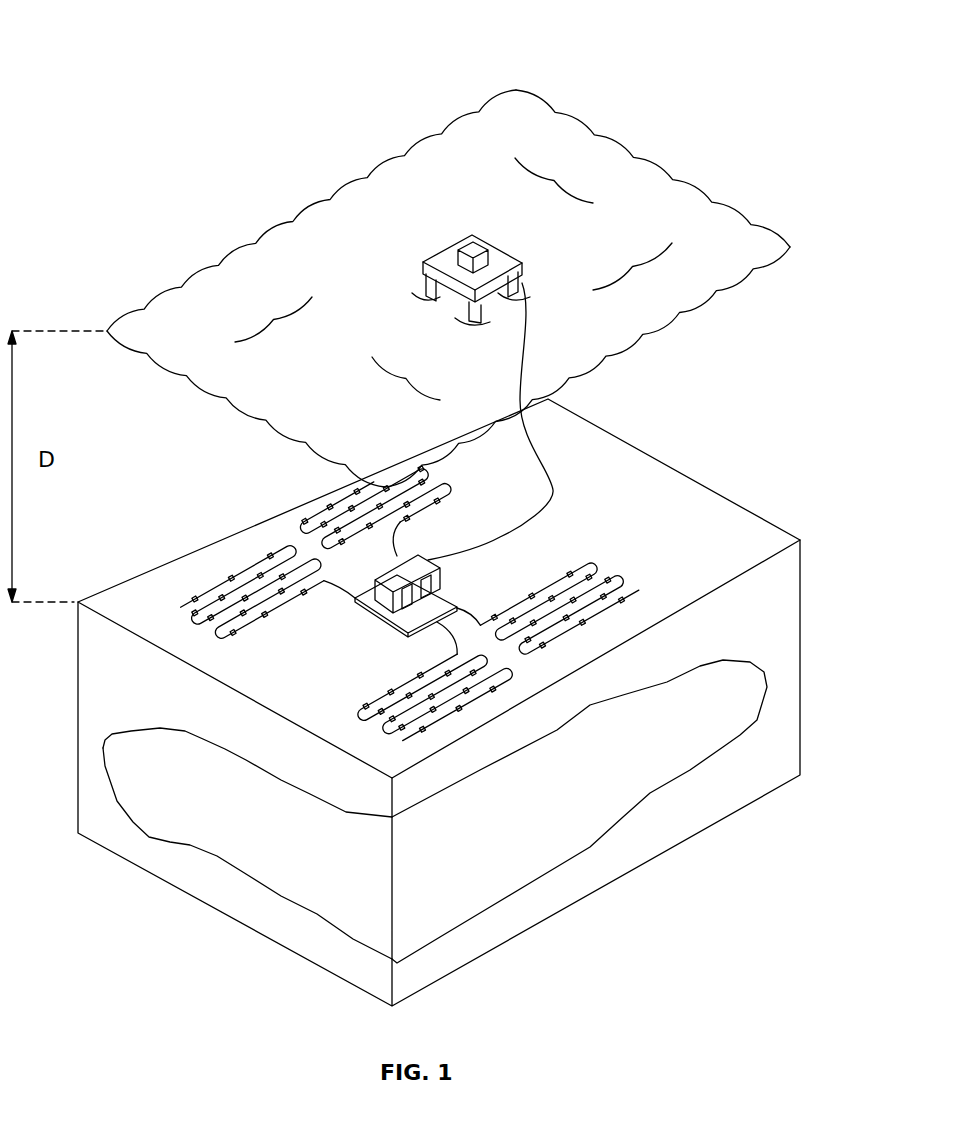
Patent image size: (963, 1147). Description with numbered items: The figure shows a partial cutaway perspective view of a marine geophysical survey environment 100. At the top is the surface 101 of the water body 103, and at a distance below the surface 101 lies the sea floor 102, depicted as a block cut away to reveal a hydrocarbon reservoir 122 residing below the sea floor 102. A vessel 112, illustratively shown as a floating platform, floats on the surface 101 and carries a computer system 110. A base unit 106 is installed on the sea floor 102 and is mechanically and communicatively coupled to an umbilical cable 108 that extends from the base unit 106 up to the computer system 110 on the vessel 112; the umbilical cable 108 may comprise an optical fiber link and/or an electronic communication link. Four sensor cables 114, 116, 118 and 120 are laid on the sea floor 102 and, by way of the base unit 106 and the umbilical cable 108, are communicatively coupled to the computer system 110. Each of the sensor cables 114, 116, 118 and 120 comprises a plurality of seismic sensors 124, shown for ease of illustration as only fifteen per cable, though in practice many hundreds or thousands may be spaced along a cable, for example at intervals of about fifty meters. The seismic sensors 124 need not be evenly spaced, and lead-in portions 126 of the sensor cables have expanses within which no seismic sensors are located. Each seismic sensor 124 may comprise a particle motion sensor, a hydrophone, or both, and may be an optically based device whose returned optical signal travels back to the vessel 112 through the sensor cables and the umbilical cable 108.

The marine geophysical survey environment 100 is at (118, 47).
The surface of the water 101 is at (348, 393).
The sea floor 102 is at (101, 596).
The water body 103 is at (673, 419).
The base unit 106 is at (380, 617).
The umbilical cable 108 is at (556, 494).
The computer system 110 is at (473, 246).
The vessel 112 is at (438, 260).
The sensor cable 114 is at (223, 588).
The sensor cable 116 is at (316, 514).
The sensor cable 118 is at (359, 717).
The sensor cable 120 is at (596, 570).
The hydrocarbon reservoir 122 is at (589, 793).
The seismic sensor 124 is at (268, 557).
The lead-in portion 126 is at (400, 538).